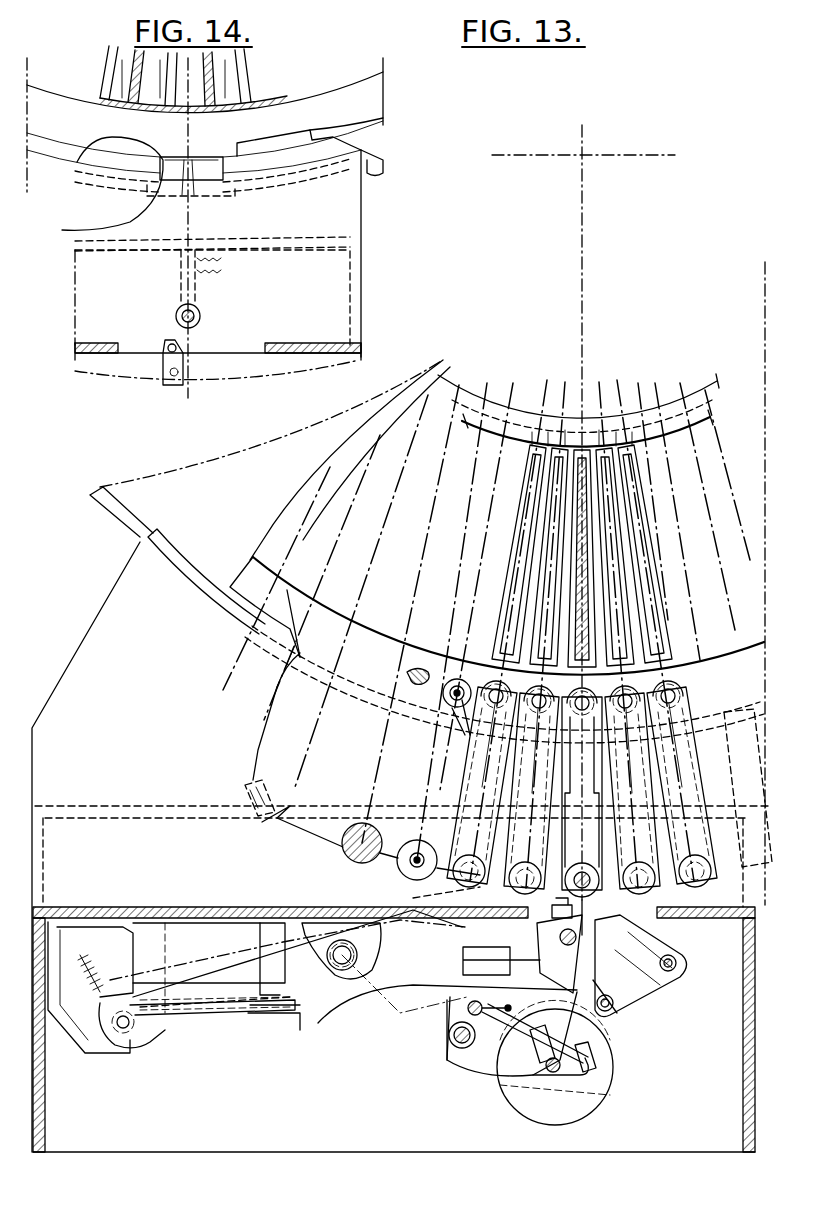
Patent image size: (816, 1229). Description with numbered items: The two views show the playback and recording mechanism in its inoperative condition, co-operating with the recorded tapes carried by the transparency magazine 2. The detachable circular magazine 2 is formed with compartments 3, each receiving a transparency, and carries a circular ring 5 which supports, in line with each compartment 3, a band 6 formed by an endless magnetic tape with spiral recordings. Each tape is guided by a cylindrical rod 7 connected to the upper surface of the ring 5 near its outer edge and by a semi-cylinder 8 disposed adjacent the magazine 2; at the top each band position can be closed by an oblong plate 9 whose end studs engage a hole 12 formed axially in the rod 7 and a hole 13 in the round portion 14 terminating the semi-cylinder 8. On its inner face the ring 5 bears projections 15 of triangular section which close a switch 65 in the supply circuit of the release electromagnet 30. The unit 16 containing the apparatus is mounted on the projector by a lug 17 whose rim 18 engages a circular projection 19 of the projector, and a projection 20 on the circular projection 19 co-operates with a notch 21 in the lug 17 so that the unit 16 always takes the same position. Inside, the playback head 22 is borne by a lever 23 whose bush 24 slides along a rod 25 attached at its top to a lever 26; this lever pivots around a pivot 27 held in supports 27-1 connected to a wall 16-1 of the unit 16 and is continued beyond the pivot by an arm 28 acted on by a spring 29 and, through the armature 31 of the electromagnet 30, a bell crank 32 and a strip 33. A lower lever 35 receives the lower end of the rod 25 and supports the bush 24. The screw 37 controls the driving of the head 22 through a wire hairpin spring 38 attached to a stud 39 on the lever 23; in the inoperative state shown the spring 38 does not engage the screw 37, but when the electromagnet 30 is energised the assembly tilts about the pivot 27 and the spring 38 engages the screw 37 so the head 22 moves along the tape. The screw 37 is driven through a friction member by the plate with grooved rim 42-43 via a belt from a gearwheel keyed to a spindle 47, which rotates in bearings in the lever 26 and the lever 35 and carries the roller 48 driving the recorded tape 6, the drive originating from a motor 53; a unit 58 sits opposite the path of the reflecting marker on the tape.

In FIG. 13, the transparency magazine 2 is at (250, 626).
In FIG. 14, the transparency compartment 3 is at (228, 90).
In FIG. 13, the transparency compartment 3 is at (520, 505).
In FIG. 13, the circular ring 5 is at (280, 710).
In FIG. 13, the band 6 is at (463, 795).
In FIG. 13, the cylindrical rod 7 is at (345, 850).
In FIG. 13, the semi-cylinder 8 is at (412, 670).
In FIG. 13, the oblong plate 9 is at (688, 690).
In FIG. 13, the hole 12 is at (403, 870).
In FIG. 13, the hole 13 is at (445, 703).
In FIG. 13, the round portion 14 is at (452, 710).
In FIG. 13, the projection 15 is at (277, 818).
In FIG. 14, the unit 16 is at (382, 283).
In FIG. 14, the wall 16-1 is at (97, 347).
In FIG. 13, the wall 16-1 is at (104, 908).
In FIG. 14, the lug 17 is at (347, 218).
In FIG. 13, the lug 17 is at (100, 633).
In FIG. 14, the rim 18 is at (381, 104).
In FIG. 13, the rim 18 is at (150, 548).
In FIG. 14, the circular projection 19 is at (372, 168).
In FIG. 13, the circular projection 19 is at (118, 510).
In FIG. 14, the projection 20 is at (84, 155).
In FIG. 14, the notch 21 is at (125, 215).
In FIG. 13, the playback head 22 is at (617, 937).
In FIG. 13, the lever 23 is at (650, 997).
In FIG. 13, the bush 24 is at (485, 1052).
In FIG. 13, the rod 25 is at (450, 1037).
In FIG. 13, the lever 26 is at (345, 975).
In FIG. 13, the pivot 27 is at (333, 992).
In FIG. 13, the support 27-1 is at (306, 893).
In FIG. 13, the arm 28 is at (160, 1040).
In FIG. 13, the spring 29 is at (85, 958).
In FIG. 13, the release electromagnet 30 is at (183, 935).
In FIG. 13, the armature 31 is at (248, 932).
In FIG. 13, the bell crank 32 is at (300, 1022).
In FIG. 13, the strip 33 is at (210, 1030).
In FIG. 13, the lever 35 is at (448, 1072).
In FIG. 13, the screw 37 is at (535, 1078).
In FIG. 13, the wire hairpin spring 38 is at (560, 1043).
In FIG. 13, the stud 39 is at (468, 1010).
In FIG. 13, the plate with grooved rim 42-43 is at (593, 1103).
In FIG. 14, the spindle 47 is at (170, 350).
In FIG. 13, the roller 48 is at (552, 912).
In FIG. 13, the motor 53 is at (75, 1035).
In FIG. 13, the unit 58 is at (567, 962).
In FIG. 14, the switch 65 is at (200, 312).
In FIG. 13, the switch 65 is at (588, 892).